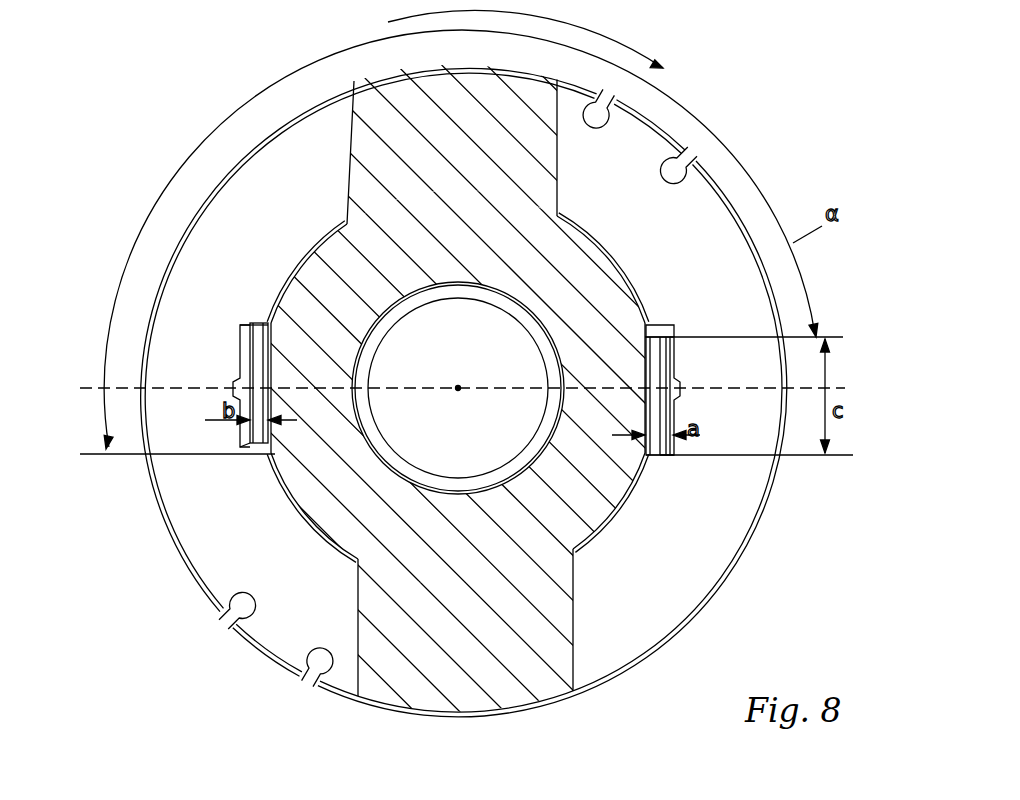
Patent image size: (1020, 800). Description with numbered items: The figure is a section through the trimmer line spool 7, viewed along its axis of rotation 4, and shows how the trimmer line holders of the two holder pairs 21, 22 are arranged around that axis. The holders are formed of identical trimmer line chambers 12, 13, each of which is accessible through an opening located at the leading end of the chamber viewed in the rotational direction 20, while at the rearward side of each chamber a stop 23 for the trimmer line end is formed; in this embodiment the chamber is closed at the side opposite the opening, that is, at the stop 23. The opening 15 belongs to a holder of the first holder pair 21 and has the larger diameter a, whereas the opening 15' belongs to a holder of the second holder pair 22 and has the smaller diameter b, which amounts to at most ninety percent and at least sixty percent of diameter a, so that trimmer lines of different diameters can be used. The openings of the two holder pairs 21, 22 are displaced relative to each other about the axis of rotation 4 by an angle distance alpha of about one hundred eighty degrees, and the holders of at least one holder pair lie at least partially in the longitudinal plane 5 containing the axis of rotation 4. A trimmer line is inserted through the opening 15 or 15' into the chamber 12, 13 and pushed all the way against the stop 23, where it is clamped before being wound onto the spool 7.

The axis of rotation 4 is at (458, 388).
The longitudinal plane 5 is at (88, 388).
The trimmer line spool 7 is at (155, 130).
The trimmer line chamber 12 is at (667, 347).
The trimmer line chamber 13 is at (250, 342).
The opening 15 is at (730, 535).
The opening 15' is at (184, 257).
The rotational direction 20 is at (525, 39).
The first holder pair 21 is at (675, 357).
The second holder pair 22 is at (242, 358).
The stop 23 is at (243, 453).